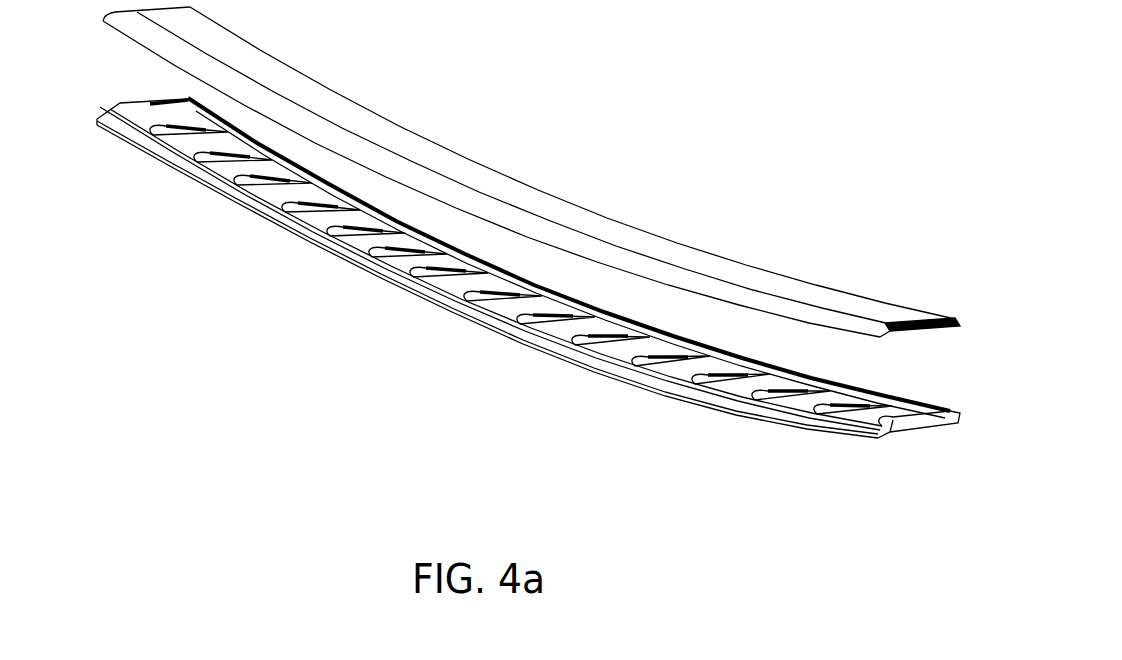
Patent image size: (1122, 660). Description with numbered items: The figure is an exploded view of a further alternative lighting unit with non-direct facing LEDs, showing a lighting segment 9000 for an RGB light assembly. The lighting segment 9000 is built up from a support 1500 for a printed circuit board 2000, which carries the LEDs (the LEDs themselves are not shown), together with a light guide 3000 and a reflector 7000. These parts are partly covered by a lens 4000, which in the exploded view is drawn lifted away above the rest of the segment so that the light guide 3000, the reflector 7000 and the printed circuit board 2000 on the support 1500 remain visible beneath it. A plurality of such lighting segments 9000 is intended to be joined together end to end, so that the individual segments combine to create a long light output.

The lighting segment 9000 is at (138, 87).
The lens 4000 is at (600, 229).
The light guide 3000 is at (400, 268).
The printed circuit board 2000 is at (860, 398).
The reflector 7000 is at (823, 430).
The support 1500 is at (913, 428).